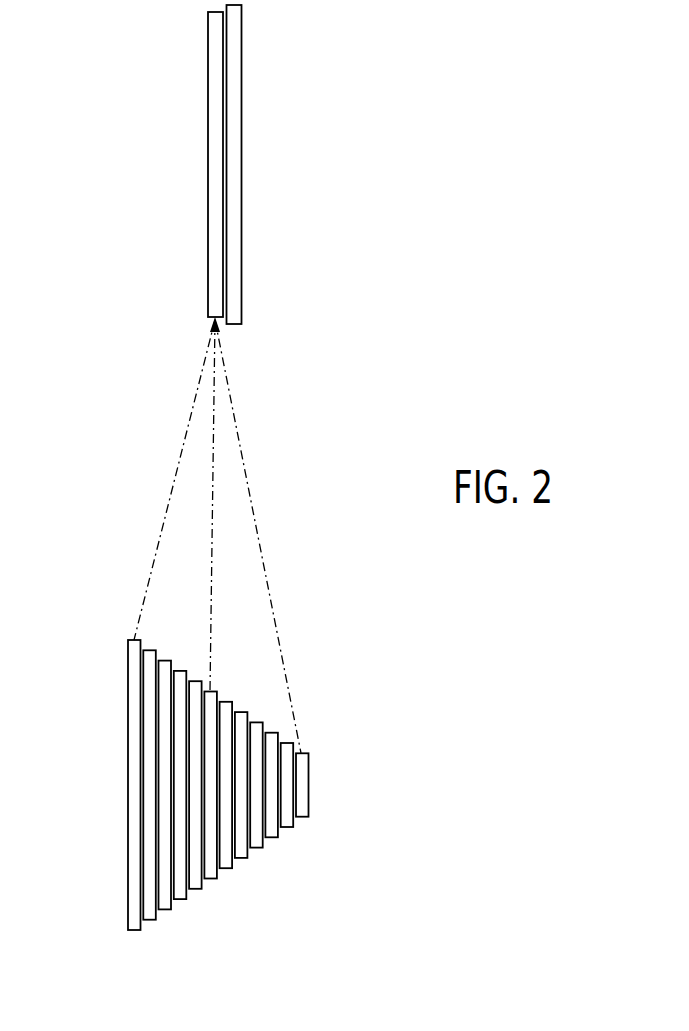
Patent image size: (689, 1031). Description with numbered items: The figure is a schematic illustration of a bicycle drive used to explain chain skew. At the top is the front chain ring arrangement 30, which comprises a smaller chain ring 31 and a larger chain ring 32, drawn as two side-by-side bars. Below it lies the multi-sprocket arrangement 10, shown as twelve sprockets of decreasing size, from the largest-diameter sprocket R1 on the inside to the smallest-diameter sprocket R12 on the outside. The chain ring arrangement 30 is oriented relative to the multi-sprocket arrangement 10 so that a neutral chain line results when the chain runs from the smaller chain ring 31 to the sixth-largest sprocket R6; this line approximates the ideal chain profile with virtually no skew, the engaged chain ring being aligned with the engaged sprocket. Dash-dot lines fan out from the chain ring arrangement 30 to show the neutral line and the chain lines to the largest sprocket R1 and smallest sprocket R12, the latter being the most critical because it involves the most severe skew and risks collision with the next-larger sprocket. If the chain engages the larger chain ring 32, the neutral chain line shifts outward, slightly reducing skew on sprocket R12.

The multi-sprocket arrangement 10 is at (211, 807).
The largest sprocket R1 is at (135, 931).
The sixth-largest sprocket R6 is at (210, 880).
The smallest sprocket R12 is at (300, 818).
The front chain ring arrangement 30 is at (240, 164).
The smaller chain ring 31 is at (208, 112).
The larger chain ring 32 is at (242, 112).